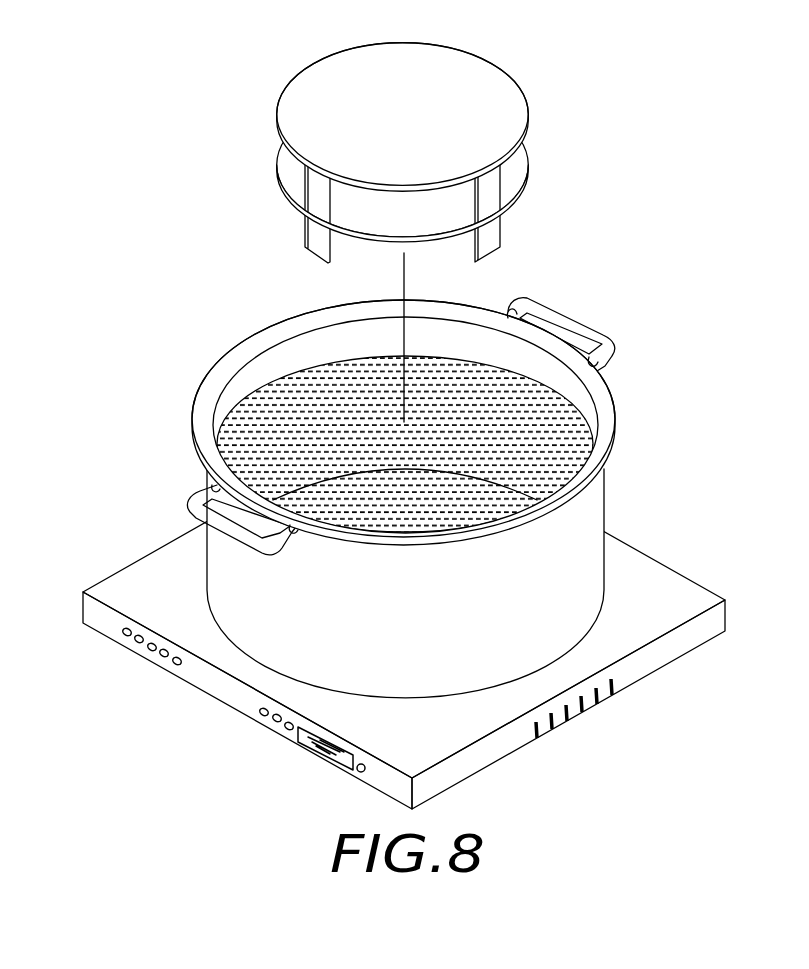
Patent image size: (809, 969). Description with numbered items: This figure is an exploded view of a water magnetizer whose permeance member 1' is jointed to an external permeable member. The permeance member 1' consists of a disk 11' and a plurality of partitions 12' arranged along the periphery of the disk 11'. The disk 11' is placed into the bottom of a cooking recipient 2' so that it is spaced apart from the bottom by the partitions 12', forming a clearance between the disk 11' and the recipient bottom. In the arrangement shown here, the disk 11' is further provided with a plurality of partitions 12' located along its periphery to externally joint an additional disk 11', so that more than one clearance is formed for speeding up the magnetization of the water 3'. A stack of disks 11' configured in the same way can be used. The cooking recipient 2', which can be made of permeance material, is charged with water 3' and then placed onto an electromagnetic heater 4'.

The permeance member 1' is at (448, 159).
The disk 11' is at (448, 142).
The partitions 12' is at (457, 218).
The cooking recipient 2' is at (447, 498).
The water 3' is at (405, 393).
The electromagnetic heater 4' is at (436, 611).